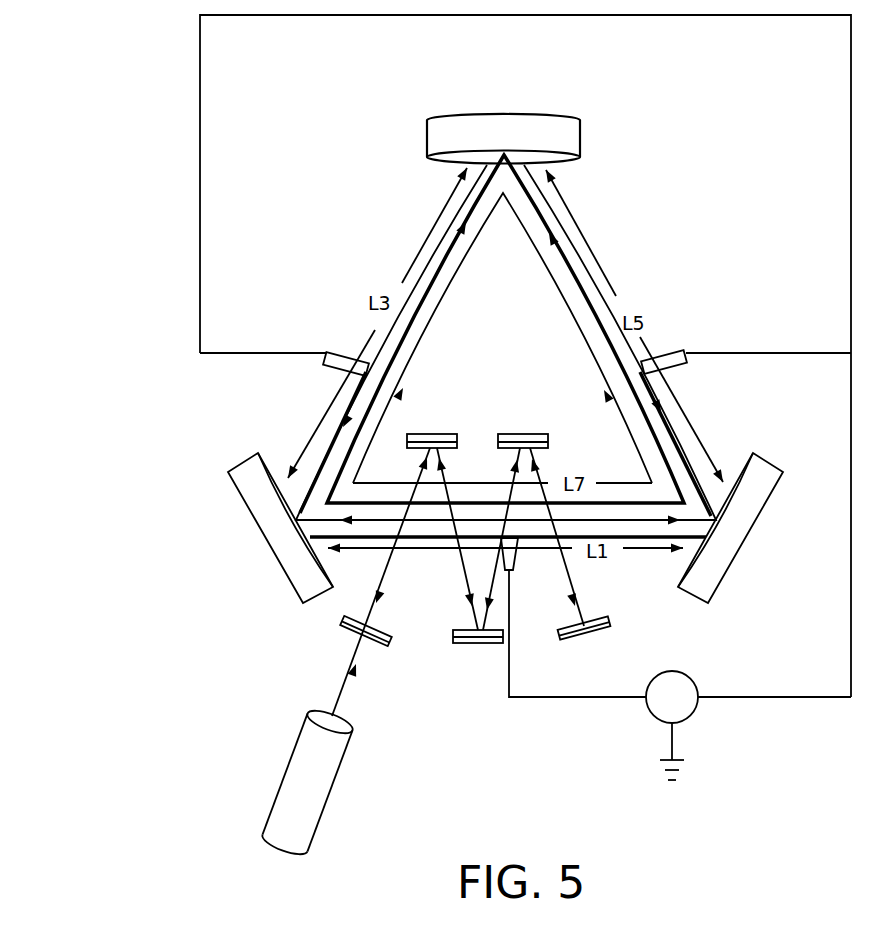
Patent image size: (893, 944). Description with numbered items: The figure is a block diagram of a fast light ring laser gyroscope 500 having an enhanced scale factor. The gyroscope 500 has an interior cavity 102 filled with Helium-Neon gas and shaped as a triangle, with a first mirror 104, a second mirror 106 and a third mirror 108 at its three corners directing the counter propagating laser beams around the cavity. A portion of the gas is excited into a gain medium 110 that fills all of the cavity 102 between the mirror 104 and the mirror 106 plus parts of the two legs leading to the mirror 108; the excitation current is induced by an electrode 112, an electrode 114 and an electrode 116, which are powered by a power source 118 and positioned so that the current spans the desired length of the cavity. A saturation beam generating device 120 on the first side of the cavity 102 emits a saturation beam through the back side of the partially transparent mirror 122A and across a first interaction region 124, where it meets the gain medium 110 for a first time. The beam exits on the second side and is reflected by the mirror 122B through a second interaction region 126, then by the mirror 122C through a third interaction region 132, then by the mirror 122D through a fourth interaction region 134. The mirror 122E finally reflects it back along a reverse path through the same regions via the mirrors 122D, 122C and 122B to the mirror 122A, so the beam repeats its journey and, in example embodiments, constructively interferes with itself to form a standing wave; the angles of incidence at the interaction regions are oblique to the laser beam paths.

The fast light ring laser gyroscope 500 is at (101, 530).
The interior cavity 102 is at (574, 262).
The first mirror 104 is at (744, 553).
The second mirror 106 is at (260, 543).
The third mirror 108 is at (427, 147).
The gain medium 110 is at (623, 530).
The electrode 112 is at (516, 574).
The electrode 114 is at (352, 360).
The electrode 116 is at (665, 368).
The power source 118 is at (686, 720).
The saturation beam generating device 120 is at (283, 782).
The mirror 122A is at (343, 622).
The mirror 122B is at (433, 433).
The mirror 122C is at (493, 645).
The mirror 122D is at (525, 433).
The mirror 122E is at (600, 636).
The first interaction region 124 is at (411, 532).
The second interaction region 126 is at (447, 527).
The third interaction region 132 is at (494, 528).
The fourth interaction region 134 is at (540, 526).